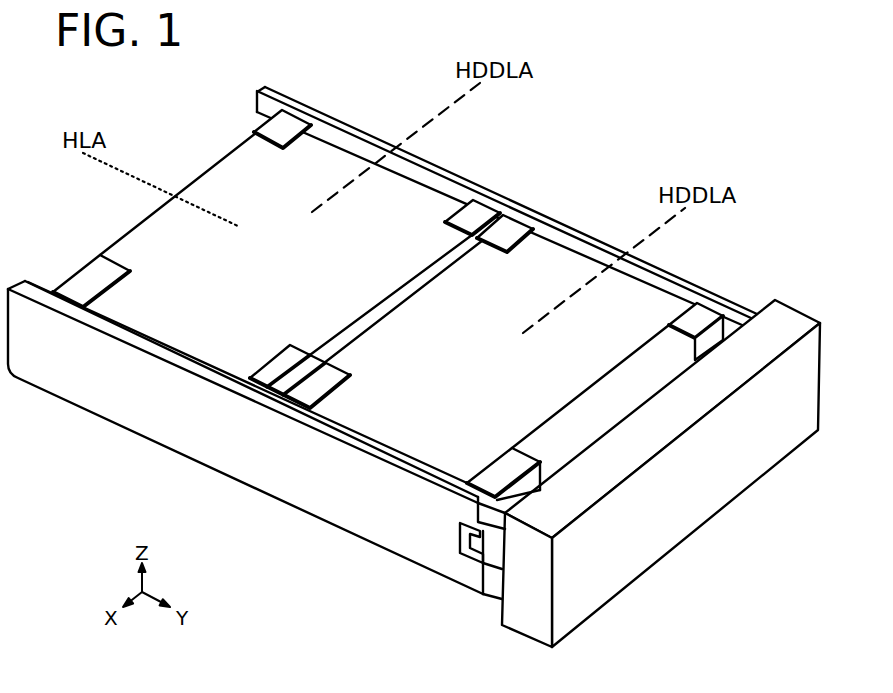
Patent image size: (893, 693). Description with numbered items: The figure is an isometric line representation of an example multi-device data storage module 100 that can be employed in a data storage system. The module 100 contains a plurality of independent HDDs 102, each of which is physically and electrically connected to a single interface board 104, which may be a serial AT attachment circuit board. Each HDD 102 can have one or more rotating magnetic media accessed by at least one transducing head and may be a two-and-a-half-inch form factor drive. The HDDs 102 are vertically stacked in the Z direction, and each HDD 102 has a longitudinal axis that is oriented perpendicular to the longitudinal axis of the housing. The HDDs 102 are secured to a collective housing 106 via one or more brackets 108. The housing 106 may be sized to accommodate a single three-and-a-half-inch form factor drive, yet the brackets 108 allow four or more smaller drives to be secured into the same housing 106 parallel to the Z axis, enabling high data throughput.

The multi-device data storage module 100 is at (728, 27).
The HDD 102 is at (290, 273).
The interface board 104 is at (49, 287).
The housing 106 is at (715, 297).
The bracket 108 is at (278, 345).